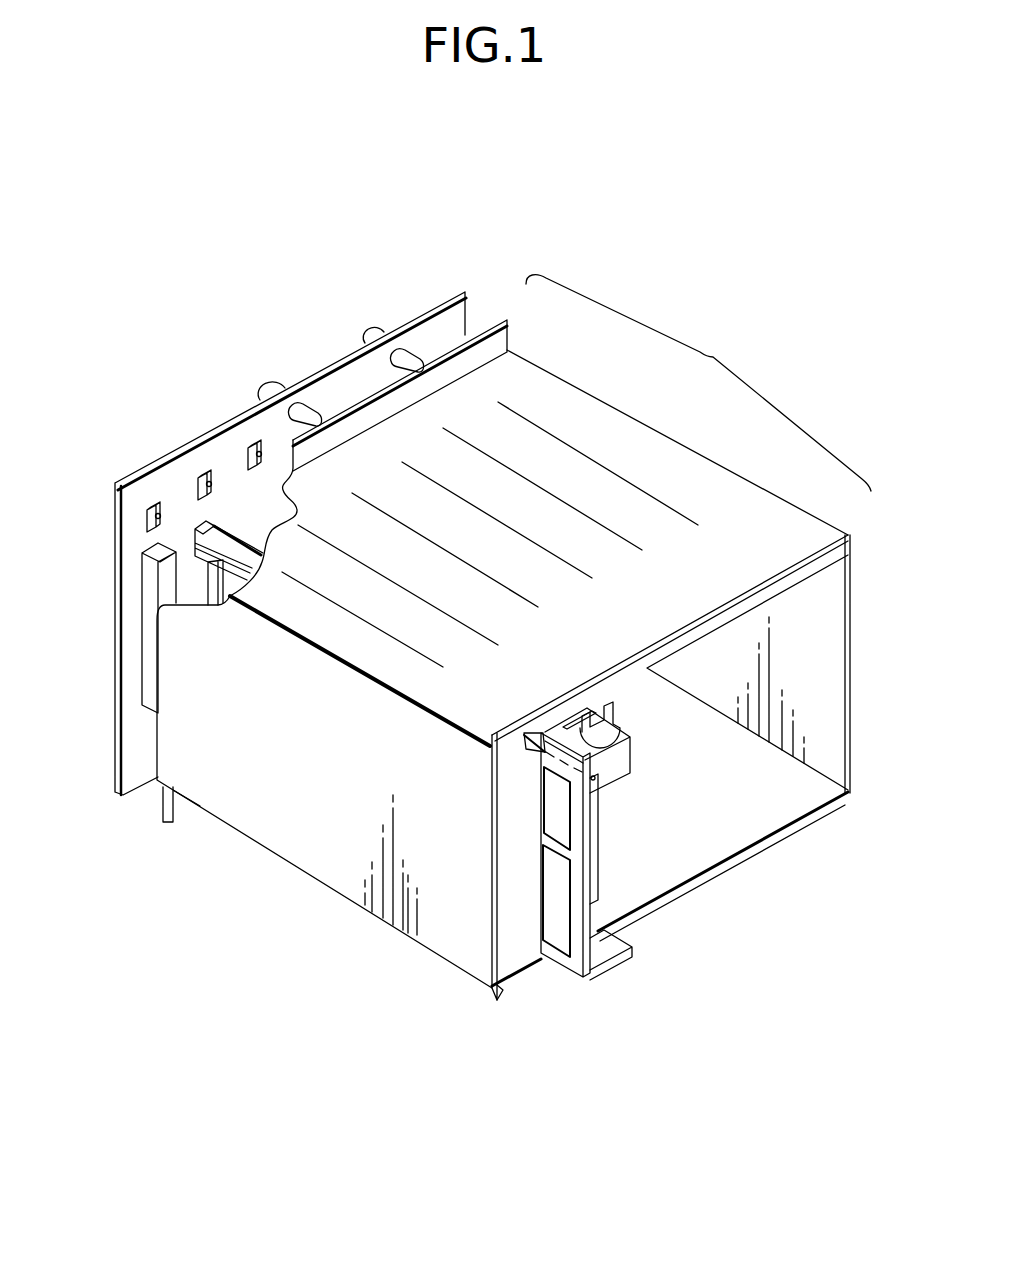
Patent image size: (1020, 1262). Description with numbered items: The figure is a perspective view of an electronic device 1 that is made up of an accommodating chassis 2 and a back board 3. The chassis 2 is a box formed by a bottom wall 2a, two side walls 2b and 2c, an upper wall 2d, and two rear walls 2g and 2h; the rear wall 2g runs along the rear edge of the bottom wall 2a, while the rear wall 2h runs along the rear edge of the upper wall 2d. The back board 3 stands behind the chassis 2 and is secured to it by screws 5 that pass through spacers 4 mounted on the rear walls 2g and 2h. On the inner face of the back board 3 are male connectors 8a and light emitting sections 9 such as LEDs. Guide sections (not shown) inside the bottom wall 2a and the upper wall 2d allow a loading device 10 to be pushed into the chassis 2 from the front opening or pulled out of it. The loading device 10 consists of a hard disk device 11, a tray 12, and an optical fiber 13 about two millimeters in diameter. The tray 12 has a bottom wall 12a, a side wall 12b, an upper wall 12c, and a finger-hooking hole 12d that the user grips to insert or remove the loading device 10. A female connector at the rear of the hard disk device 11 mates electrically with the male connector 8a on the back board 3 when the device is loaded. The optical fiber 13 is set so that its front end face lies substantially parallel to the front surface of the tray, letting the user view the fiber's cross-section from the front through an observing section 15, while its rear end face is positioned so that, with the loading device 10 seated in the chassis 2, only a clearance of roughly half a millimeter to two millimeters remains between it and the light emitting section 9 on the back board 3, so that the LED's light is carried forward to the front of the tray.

The electronic device 1 is at (550, 510).
The accommodating chassis 2 is at (283, 835).
The bottom wall 2a is at (797, 789).
The side wall 2b is at (850, 617).
The side wall 2c is at (492, 790).
The upper wall 2d is at (818, 547).
The rear wall 2g is at (163, 813).
The rear wall 2h is at (453, 340).
The back board 3 is at (115, 768).
The spacer 4 is at (300, 410).
The screw 5 is at (260, 394).
The male connector 8a is at (142, 650).
The light emitting section 9 is at (147, 517).
The loading device 10 is at (690, 1003).
The hard disk device 11 is at (600, 882).
The tray 12 is at (565, 968).
The bottom wall 12a is at (628, 957).
The side wall 12b is at (498, 993).
The bracket top flange 12c is at (596, 765).
The finger-hooking hole 12d is at (575, 975).
The optical fiber 13 is at (540, 752).
The observing section 15 is at (597, 782).